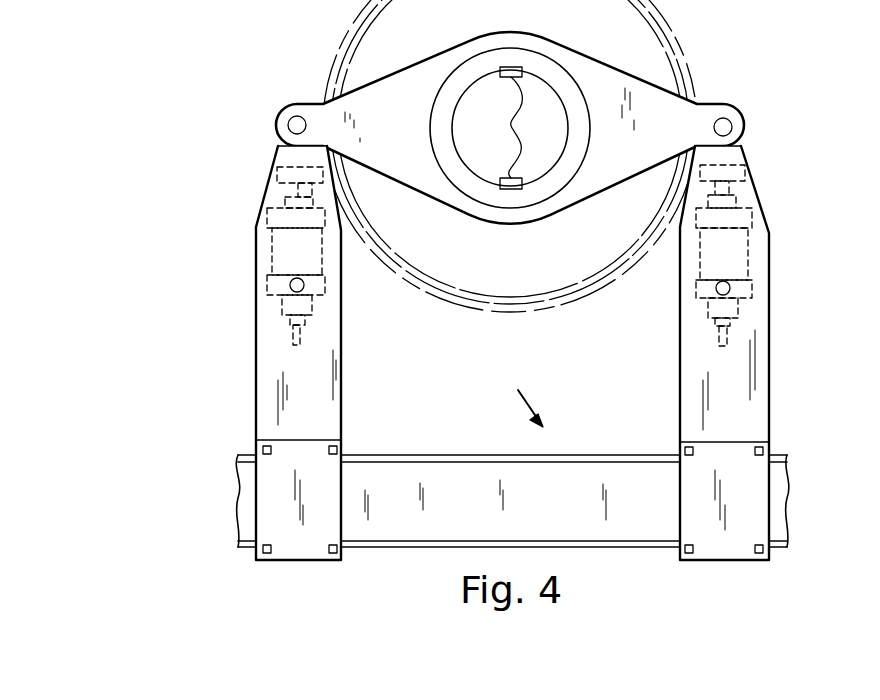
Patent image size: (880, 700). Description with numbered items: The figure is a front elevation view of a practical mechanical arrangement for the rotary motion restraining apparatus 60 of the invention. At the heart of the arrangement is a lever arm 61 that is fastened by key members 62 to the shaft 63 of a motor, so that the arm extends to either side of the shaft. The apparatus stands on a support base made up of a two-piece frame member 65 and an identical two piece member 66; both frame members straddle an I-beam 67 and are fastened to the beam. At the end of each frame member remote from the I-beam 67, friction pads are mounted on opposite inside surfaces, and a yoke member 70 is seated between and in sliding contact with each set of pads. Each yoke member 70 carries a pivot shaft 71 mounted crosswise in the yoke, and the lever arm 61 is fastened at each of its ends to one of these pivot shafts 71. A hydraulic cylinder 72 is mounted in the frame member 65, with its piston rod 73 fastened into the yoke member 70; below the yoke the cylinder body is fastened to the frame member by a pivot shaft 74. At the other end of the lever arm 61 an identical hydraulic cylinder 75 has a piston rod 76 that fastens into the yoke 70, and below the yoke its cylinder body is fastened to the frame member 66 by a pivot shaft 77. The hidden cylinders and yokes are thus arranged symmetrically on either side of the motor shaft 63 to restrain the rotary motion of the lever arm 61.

The rotary motion restraining apparatus 60 is at (128, 163).
The lever arm 61 is at (417, 73).
The key members 62 is at (512, 126).
The shaft 63 is at (540, 104).
The two-piece frame member 65 is at (272, 362).
The two piece member 66 is at (758, 374).
The I-beam 67 is at (473, 456).
The yoke member 70 is at (283, 161).
The pivot shaft 71 is at (291, 122).
The hydraulic cylinder 72 is at (285, 253).
The piston rod 73 is at (293, 192).
The pivot shaft 74 is at (305, 288).
The hydraulic cylinder 75 is at (730, 262).
The piston rod 76 is at (730, 182).
The pivot shaft 77 is at (716, 288).